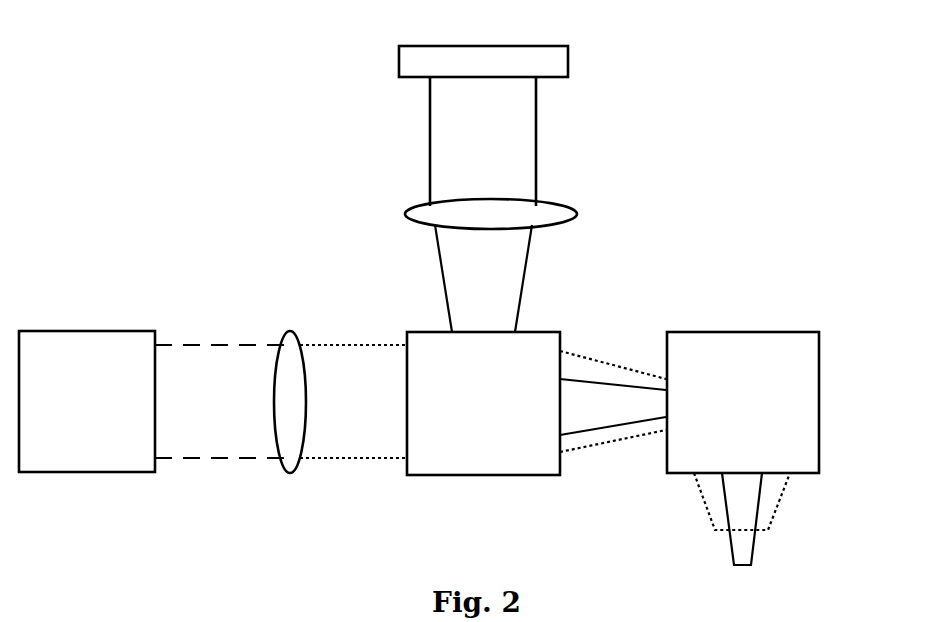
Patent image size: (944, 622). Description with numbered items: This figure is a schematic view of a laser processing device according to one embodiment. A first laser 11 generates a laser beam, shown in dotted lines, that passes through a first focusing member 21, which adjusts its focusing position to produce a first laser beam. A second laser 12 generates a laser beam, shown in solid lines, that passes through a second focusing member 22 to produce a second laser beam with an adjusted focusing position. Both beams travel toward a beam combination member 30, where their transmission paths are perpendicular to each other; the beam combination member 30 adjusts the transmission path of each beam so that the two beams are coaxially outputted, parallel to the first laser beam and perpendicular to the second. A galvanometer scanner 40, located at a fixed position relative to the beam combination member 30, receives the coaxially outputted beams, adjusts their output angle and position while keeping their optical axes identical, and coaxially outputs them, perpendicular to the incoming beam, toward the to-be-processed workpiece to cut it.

The first laser 11 is at (131, 331).
The first focusing member 21 is at (290, 331).
The second laser 12 is at (542, 46).
The second focusing member 22 is at (543, 202).
The beam combination member 30 is at (560, 332).
The galvanometer scanner 40 is at (818, 332).